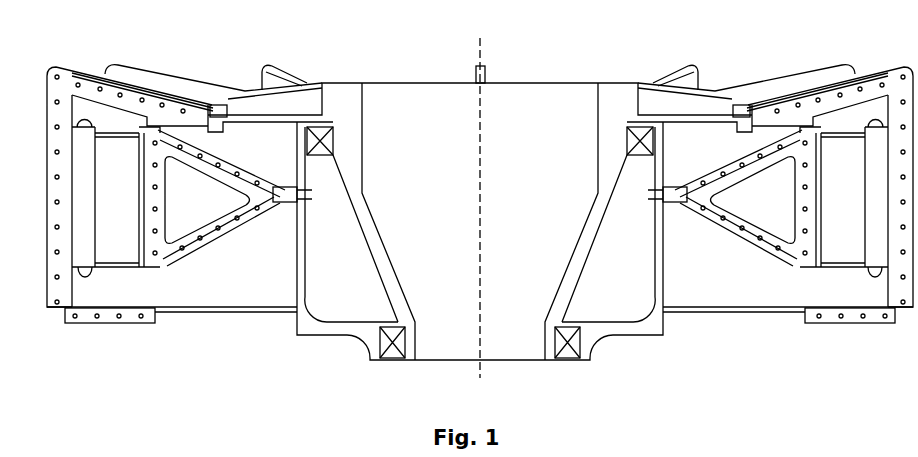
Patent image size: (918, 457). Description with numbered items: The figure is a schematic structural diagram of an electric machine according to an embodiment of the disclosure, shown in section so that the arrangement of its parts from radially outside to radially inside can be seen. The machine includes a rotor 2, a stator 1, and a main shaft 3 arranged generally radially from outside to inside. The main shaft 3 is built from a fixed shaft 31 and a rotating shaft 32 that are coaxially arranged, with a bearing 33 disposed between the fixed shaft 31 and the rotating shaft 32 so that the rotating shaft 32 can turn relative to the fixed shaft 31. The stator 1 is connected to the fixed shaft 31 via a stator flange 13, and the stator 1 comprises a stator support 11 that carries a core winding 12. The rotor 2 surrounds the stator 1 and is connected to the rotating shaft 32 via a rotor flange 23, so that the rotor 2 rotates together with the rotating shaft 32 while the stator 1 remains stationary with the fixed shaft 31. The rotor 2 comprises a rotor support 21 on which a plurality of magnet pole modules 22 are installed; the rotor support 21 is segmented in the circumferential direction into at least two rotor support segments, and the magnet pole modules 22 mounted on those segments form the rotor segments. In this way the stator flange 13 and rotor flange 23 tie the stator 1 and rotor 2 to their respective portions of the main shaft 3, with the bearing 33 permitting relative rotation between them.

The stator 1 is at (192, 211).
The stator support 11 is at (167, 248).
The core winding 12 is at (88, 258).
The stator flange 13 is at (282, 190).
The rotor 2 is at (197, 74).
The rotor support 21 is at (60, 84).
The magnet pole module 22 is at (72, 175).
The rotor flange 23 is at (214, 108).
The main shaft 3 is at (480, 208).
The fixed shaft 31 is at (317, 325).
The rotating shaft 32 is at (350, 163).
The bearing 33 is at (632, 140).